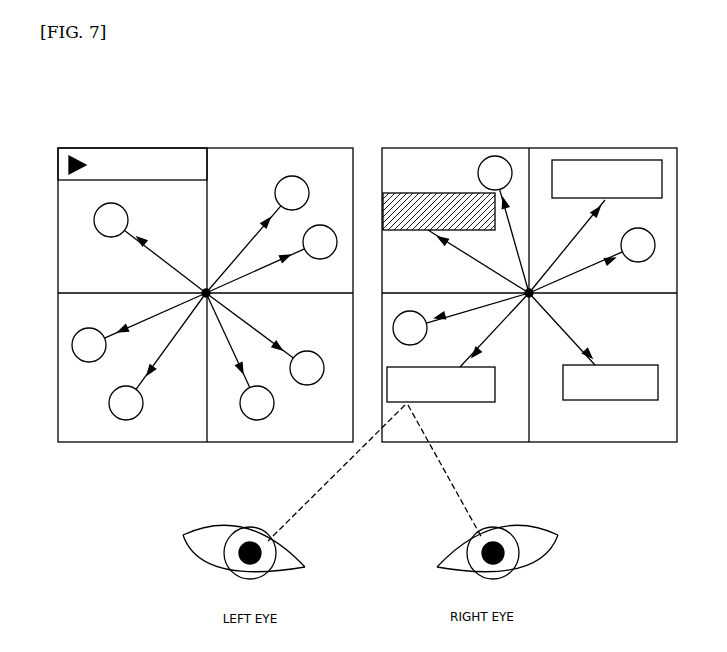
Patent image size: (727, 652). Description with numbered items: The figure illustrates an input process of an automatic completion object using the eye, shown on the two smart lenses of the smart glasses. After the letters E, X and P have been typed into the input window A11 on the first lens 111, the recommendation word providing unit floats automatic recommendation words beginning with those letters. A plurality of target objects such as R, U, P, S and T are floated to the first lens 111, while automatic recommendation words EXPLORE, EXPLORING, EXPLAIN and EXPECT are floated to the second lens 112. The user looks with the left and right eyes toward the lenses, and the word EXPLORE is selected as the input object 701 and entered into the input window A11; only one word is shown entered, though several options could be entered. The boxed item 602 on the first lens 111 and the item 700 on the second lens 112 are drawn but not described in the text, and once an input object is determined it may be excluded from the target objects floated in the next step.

The first lens 111 is at (205, 263).
The second lens 112 is at (628, 149).
The EXP indicator box 602 is at (112, 149).
The input window A11 is at (132, 191).
The input object 701 is at (440, 194).
The EXPECT item 700 is at (619, 365).